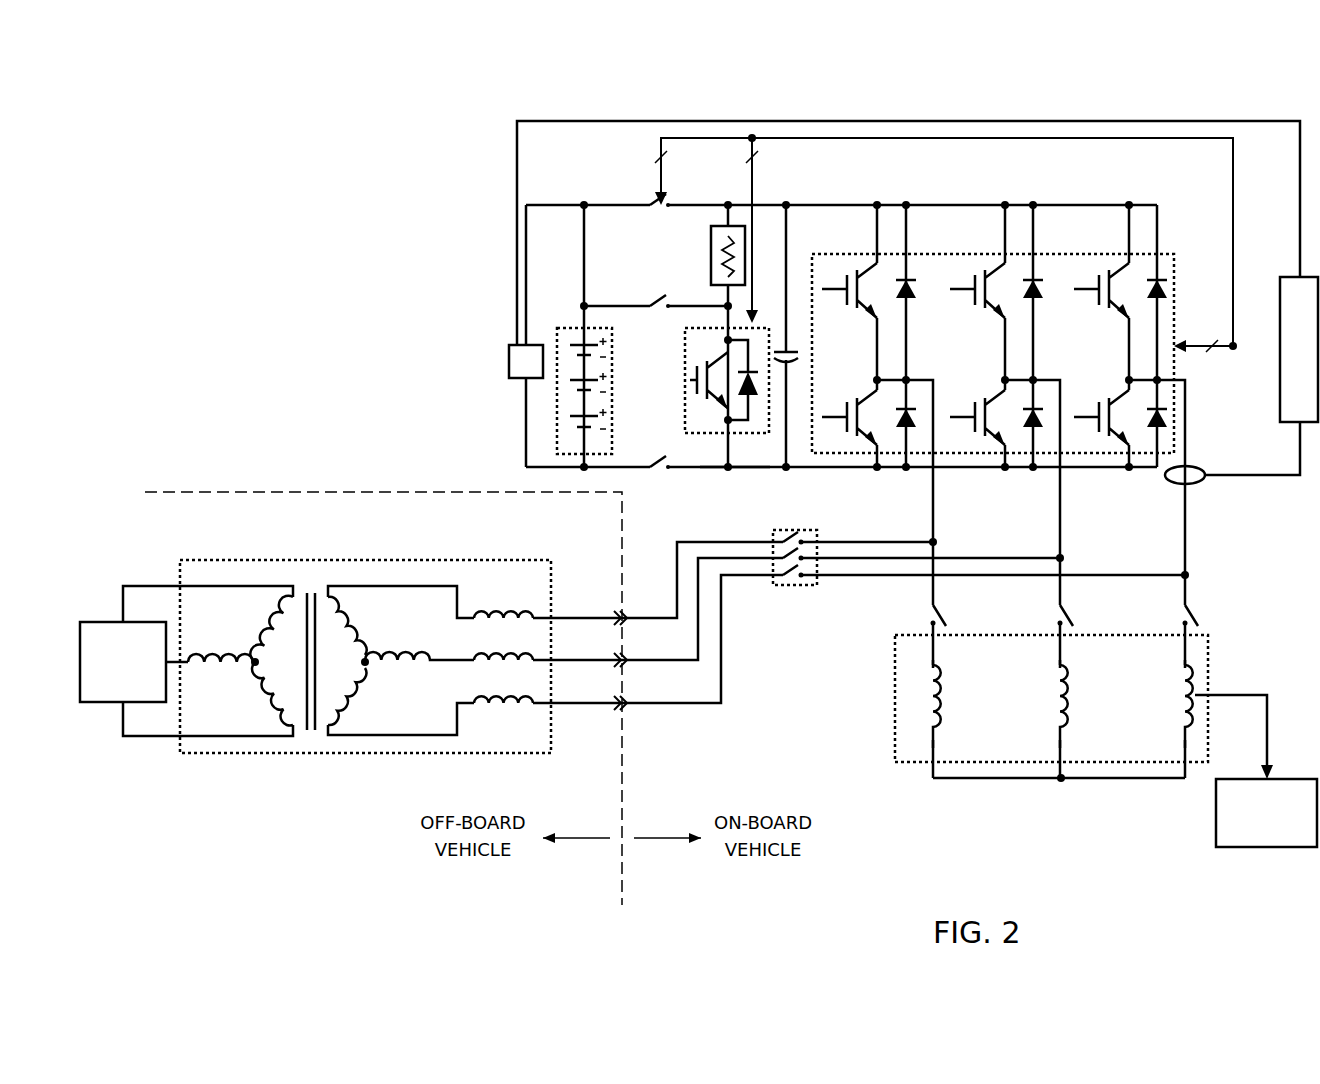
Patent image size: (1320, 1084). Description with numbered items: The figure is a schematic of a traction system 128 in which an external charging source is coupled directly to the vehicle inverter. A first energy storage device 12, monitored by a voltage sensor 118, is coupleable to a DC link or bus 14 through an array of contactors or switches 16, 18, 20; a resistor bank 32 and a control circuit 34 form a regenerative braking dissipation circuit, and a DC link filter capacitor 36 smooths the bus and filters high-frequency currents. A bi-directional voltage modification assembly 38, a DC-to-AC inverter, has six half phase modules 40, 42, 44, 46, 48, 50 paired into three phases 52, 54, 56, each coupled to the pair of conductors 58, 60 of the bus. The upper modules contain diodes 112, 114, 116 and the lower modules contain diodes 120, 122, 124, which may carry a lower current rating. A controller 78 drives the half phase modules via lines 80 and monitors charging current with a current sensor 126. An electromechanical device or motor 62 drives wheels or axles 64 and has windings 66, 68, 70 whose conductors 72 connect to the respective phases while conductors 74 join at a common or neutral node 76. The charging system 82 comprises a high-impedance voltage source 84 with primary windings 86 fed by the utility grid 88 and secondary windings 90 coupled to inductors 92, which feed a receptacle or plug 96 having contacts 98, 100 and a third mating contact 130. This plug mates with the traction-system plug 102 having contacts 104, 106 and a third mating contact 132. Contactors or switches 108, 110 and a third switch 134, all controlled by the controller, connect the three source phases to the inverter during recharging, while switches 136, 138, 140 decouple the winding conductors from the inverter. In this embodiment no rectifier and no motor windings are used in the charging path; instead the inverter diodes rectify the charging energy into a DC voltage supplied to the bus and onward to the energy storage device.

The first energy storage device 12 is at (573, 328).
The DC link or bus 14 is at (822, 205).
The contactor or switch 16 is at (655, 212).
The contactor or switch 18 is at (655, 300).
The contactor or switch 20 is at (655, 462).
The resistor bank 32 is at (711, 256).
The control circuit 34 is at (746, 434).
The DC link filter capacitor 36 is at (781, 350).
The bi-directional voltage modification assembly 38 is at (812, 266).
The half phase module 40 is at (844, 309).
The half phase module 42 is at (843, 439).
The half phase module 44 is at (972, 309).
The half phase module 46 is at (970, 439).
The half phase module 48 is at (1097, 309).
The half phase module 50 is at (1093, 439).
The phase 52 is at (869, 243).
The phase 54 is at (997, 243).
The phase 56 is at (1121, 243).
The conductor of DC bus 58 is at (790, 204).
The conductor of DC bus 60 is at (712, 470).
The electromechanical device or motor 62 is at (895, 672).
The driving wheels or axles 64 is at (1216, 807).
The winding 66 is at (940, 706).
The winding 68 is at (1068, 706).
The winding 70 is at (1185, 679).
The conductors 72 is at (936, 663).
The conductors 74 is at (936, 749).
The common or neutral node 76 is at (983, 780).
The controller 78 is at (1279, 401).
The lines 80 is at (1279, 342).
The charging system 82 is at (264, 770).
The external high-impedance voltage source 84 is at (258, 560).
The primary windings 86 is at (223, 652).
The utility grid 88 is at (98, 703).
The secondary windings 90 is at (397, 652).
The inductors 92 is at (489, 657).
The receptacle or plug 96 is at (612, 750).
The contact 98 is at (616, 613).
The contact 100 is at (617, 708).
The plug 102 is at (632, 752).
The contact 104 is at (630, 613).
The contact 106 is at (629, 708).
The contactor or switch 108 is at (784, 531).
The contactor or switch 110 is at (784, 586).
The diode 112 is at (917, 297).
The diode 114 is at (1044, 297).
The diode 116 is at (1168, 297).
The voltage sensor 118 is at (536, 345).
The diode 120 is at (900, 427).
The diode 122 is at (1028, 427).
The diode 124 is at (1152, 427).
The current sensor 126 is at (1197, 467).
The traction system 128 is at (877, 100).
The mating contact 130 is at (615, 665).
The mating contact 132 is at (630, 665).
The third contactor or switch 134 is at (806, 557).
The contactor or switch 136 is at (930, 608).
The contactor or switch 138 is at (1057, 608).
The contactor or switch 140 is at (1182, 608).